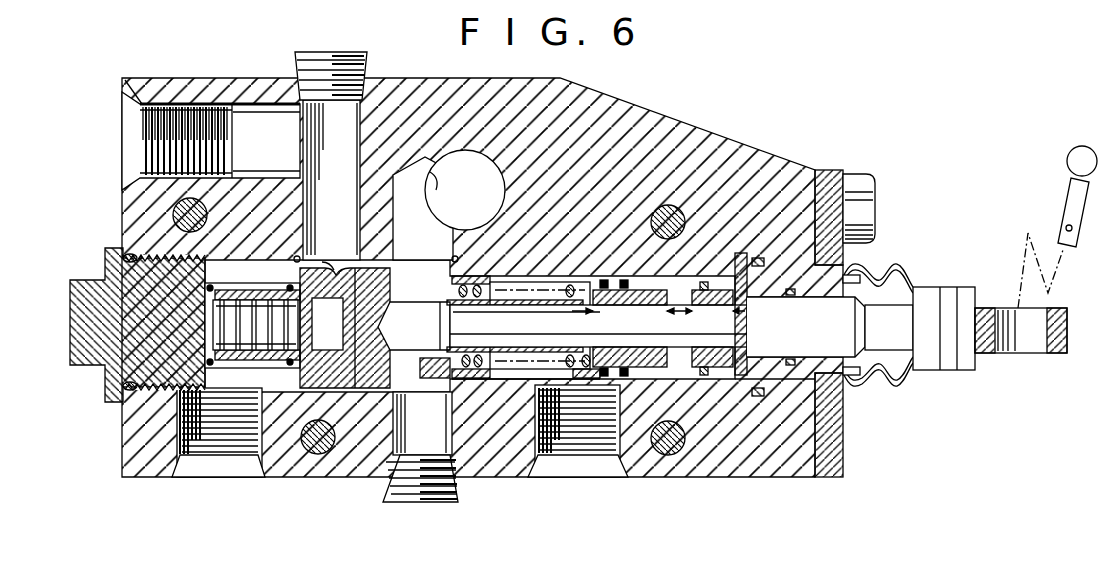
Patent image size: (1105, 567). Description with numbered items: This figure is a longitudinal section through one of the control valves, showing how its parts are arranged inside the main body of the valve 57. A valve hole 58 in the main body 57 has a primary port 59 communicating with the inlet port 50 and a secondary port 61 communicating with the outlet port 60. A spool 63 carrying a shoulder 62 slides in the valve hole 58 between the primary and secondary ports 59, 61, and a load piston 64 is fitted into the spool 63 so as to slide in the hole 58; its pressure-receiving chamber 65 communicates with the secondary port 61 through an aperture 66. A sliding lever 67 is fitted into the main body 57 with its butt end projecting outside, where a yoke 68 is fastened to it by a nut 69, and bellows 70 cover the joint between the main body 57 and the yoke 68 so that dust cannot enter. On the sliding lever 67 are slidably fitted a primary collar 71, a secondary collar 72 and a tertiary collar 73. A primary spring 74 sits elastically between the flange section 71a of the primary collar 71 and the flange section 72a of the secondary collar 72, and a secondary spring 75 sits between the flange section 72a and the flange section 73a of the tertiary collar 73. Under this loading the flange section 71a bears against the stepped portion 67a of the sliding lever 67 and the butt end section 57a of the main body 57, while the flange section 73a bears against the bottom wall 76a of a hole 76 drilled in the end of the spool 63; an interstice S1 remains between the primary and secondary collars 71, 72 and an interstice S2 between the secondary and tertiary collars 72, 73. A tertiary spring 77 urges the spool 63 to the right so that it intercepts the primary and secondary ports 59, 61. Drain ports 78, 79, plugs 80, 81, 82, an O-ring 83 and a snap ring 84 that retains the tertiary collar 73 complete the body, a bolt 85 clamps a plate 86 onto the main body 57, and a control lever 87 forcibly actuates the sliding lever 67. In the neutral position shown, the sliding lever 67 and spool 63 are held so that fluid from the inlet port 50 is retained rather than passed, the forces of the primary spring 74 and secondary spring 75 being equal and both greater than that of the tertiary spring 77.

The inlet port 50 is at (430, 188).
The main body of the valve 57 is at (690, 132).
The butt end section of the main body 57a is at (726, 383).
The valve hole 58 is at (502, 270).
The primary port 59 is at (376, 247).
The outlet port 60 is at (190, 108).
The secondary port 61 is at (304, 260).
The shoulder 62 is at (403, 260).
The spool 63 is at (384, 386).
The load piston 64 is at (212, 328).
The pressure-receiving chamber 65 is at (333, 389).
The aperture 66 is at (336, 268).
The sliding lever 67 is at (667, 345).
The stepped portion of the sliding lever 67a is at (752, 316).
The yoke 68 is at (984, 348).
The nut 69 is at (966, 372).
The bellows 70 is at (915, 282).
The primary collar 71 is at (694, 288).
The flange section of the primary collar 71a is at (740, 262).
The secondary collar 72 is at (630, 288).
The flange section of the secondary collar 72a is at (604, 278).
The tertiary collar 73 is at (569, 375).
The flange section of the tertiary collar 73a is at (480, 383).
The primary spring 74 is at (700, 280).
The secondary spring 75 is at (562, 282).
The hole 76 is at (488, 280).
The bottom wall of the hole 76a is at (414, 326).
The tertiary spring 77 is at (262, 368).
The drain port 78 is at (602, 462).
The drain port 79 is at (244, 462).
The plug 80 is at (458, 494).
The plug 81 is at (366, 66).
The plug 82 is at (96, 280).
The O-ring 83 is at (124, 254).
The snap ring 84 is at (438, 370).
The bolt 85 is at (868, 208).
The plate 86 is at (826, 170).
The control lever 87 is at (1071, 202).
The interstice S1 is at (712, 319).
The interstice S2 is at (626, 319).